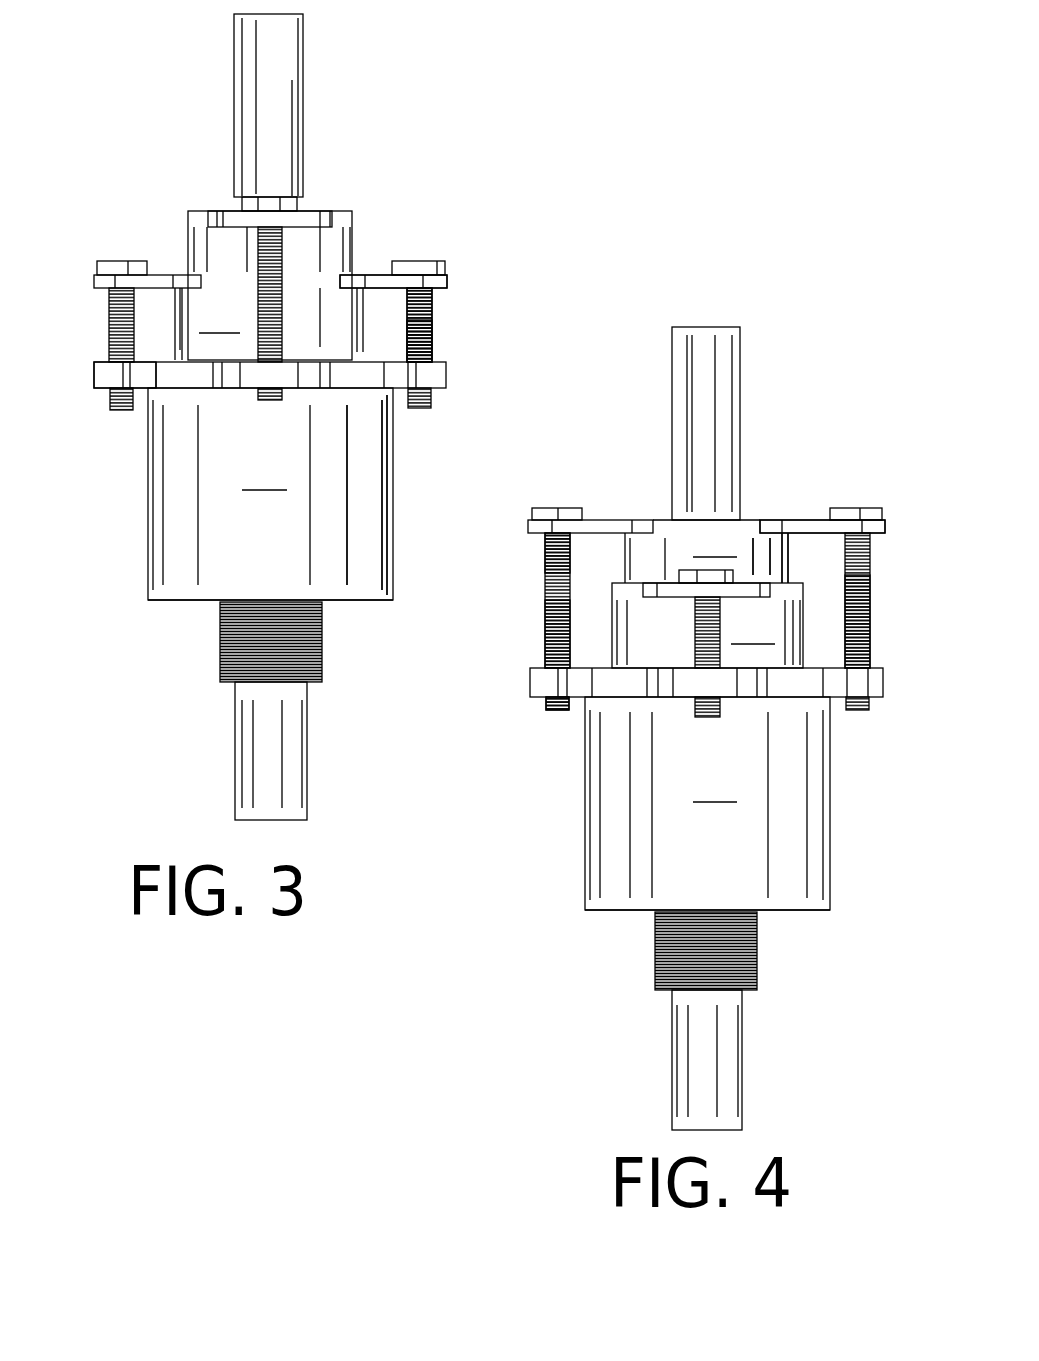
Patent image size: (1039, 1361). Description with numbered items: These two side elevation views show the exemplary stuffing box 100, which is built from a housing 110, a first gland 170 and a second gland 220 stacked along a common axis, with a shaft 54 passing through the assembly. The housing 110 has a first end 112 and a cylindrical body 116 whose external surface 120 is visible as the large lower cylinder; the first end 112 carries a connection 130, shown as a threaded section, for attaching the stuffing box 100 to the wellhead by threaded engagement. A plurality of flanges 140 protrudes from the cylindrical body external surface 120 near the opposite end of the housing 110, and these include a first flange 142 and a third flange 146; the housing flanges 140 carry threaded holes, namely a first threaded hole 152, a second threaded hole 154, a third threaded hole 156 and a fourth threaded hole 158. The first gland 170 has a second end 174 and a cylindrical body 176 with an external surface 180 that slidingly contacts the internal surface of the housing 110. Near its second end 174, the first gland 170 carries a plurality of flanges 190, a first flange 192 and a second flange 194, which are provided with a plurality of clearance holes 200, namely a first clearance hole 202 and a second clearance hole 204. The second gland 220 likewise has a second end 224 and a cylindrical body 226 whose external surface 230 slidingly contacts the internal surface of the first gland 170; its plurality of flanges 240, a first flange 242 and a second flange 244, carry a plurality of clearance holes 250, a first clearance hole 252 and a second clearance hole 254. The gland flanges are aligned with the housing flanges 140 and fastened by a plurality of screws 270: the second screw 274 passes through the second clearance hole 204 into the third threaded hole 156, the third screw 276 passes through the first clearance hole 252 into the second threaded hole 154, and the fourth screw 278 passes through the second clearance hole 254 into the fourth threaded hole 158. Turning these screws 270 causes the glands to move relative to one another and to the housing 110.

In FIG. 3, the shaft 54 is at (254, 126).
In FIG. 4, the shaft 54 is at (698, 1027).
In FIG. 3, the stuffing box 100 is at (403, 123).
In FIG. 4, the stuffing box 100 is at (722, 283).
In FIG. 3, the housing 110 is at (304, 494).
In FIG. 3, the first end 112 is at (188, 605).
In FIG. 4, the first end 112 is at (628, 910).
In FIG. 3, the cylindrical body 116 is at (368, 547).
In FIG. 3, the external surface 120 is at (393, 483).
In FIG. 4, the external surface 120 is at (707, 803).
In FIG. 3, the connection 130 is at (323, 637).
In FIG. 4, the connection 130 is at (747, 953).
In FIG. 4, the plurality of flanges 140 is at (870, 683).
In FIG. 3, the first flange 142 is at (428, 375).
In FIG. 3, the third flange 146 is at (108, 372).
In FIG. 3, the first threaded hole 152 is at (432, 392).
In FIG. 4, the second threaded hole 154 is at (878, 702).
In FIG. 3, the third threaded hole 156 is at (142, 390).
In FIG. 4, the fourth threaded hole 158 is at (547, 697).
In FIG. 3, the first gland 170 is at (349, 255).
In FIG. 4, the first gland 170 is at (620, 619).
In FIG. 3, the second end 174 is at (177, 272).
In FIG. 3, the cylindrical body 176 is at (433, 340).
In FIG. 3, the external surface 180 is at (300, 296).
In FIG. 4, the external surface 180 is at (645, 610).
In FIG. 3, the plurality of flanges 190 is at (373, 272).
In FIG. 3, the first flange 192 is at (410, 280).
In FIG. 3, the second flange 194 is at (163, 280).
In FIG. 3, the plurality of clearance holes 200 is at (437, 294).
In FIG. 3, the first clearance hole 202 is at (403, 290).
In FIG. 3, the second clearance hole 204 is at (107, 295).
In FIG. 3, the second gland 220 is at (304, 244).
In FIG. 4, the second gland 220 is at (674, 561).
In FIG. 4, the second end 224 is at (755, 520).
In FIG. 4, the cylindrical body 226 is at (767, 558).
In FIG. 4, the external surface 230 is at (672, 534).
In FIG. 4, the plurality of flanges 240 is at (805, 521).
In FIG. 4, the first flange 242 is at (817, 530).
In FIG. 4, the second flange 244 is at (608, 527).
In FIG. 4, the plurality of clearance holes 250 is at (542, 538).
In FIG. 4, the first clearance hole 252 is at (872, 537).
In FIG. 4, the second clearance hole 254 is at (572, 537).
In FIG. 3, the plurality of screws 270 is at (437, 308).
In FIG. 4, the plurality of screws 270 is at (542, 622).
In FIG. 3, the second screw 274 is at (108, 303).
In FIG. 4, the third screw 276 is at (868, 583).
In FIG. 4, the fourth screw 278 is at (563, 703).